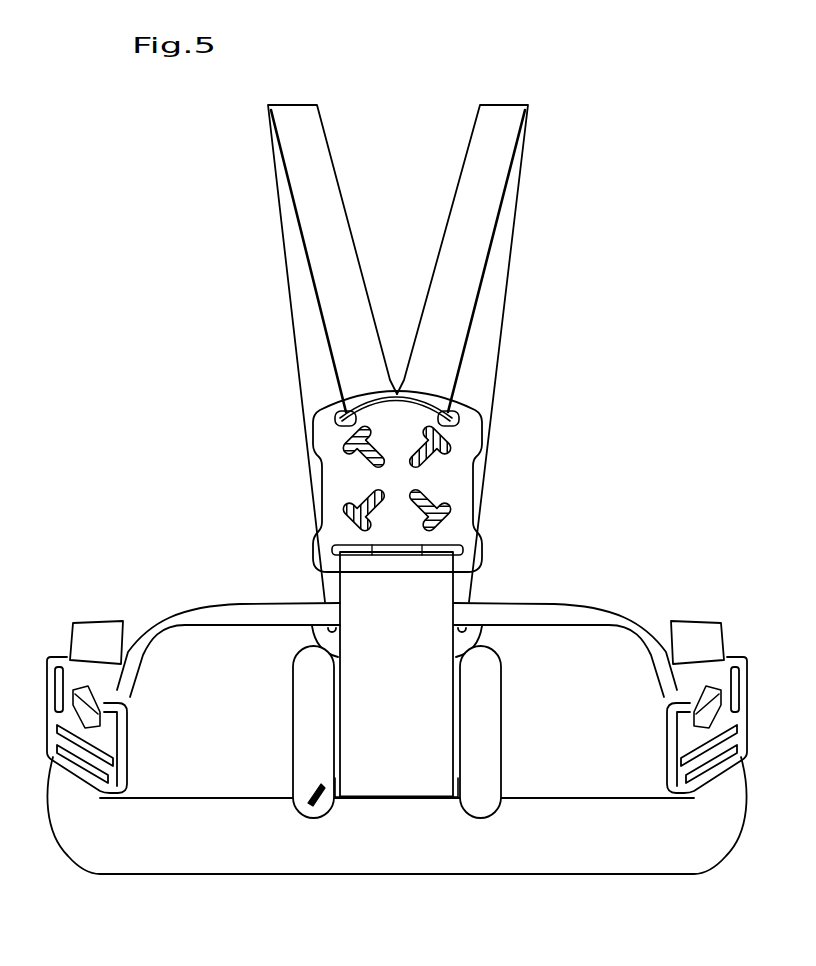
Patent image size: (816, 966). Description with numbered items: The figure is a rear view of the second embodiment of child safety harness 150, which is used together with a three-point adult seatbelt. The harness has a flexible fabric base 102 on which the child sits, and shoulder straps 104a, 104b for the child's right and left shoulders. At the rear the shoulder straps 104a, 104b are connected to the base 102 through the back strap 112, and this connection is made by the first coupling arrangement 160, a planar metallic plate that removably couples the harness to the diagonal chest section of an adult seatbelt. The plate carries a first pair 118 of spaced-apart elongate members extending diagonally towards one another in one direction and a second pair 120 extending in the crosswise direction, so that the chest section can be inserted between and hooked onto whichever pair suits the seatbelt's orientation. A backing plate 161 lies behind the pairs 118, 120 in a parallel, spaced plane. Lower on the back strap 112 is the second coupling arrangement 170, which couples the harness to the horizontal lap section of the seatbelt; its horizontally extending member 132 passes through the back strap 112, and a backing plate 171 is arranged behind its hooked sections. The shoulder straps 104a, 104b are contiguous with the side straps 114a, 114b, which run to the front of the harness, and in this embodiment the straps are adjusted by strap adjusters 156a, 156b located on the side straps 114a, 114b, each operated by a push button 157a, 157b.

The child safety harness 150 is at (580, 80).
The shoulder strap 104b is at (307, 137).
The shoulder strap 104a is at (487, 145).
The first coupling arrangement 160 is at (460, 500).
The backing plate 161 is at (350, 485).
The first pair of spaced-apart elongate members 118 is at (352, 464).
The second pair of spaced-apart elongate members 120 is at (347, 515).
The back strap 112 is at (378, 763).
The side strap 114b is at (130, 657).
The side strap 114a is at (675, 653).
The strap adjuster 156b is at (60, 657).
The strap adjuster 156a is at (742, 660).
The push button 157b is at (90, 697).
The push button 157a is at (703, 723).
The base 102 is at (645, 817).
The horizontally extending member 132 is at (457, 690).
The backing plate 171 is at (303, 777).
The second coupling arrangement 170 is at (297, 813).